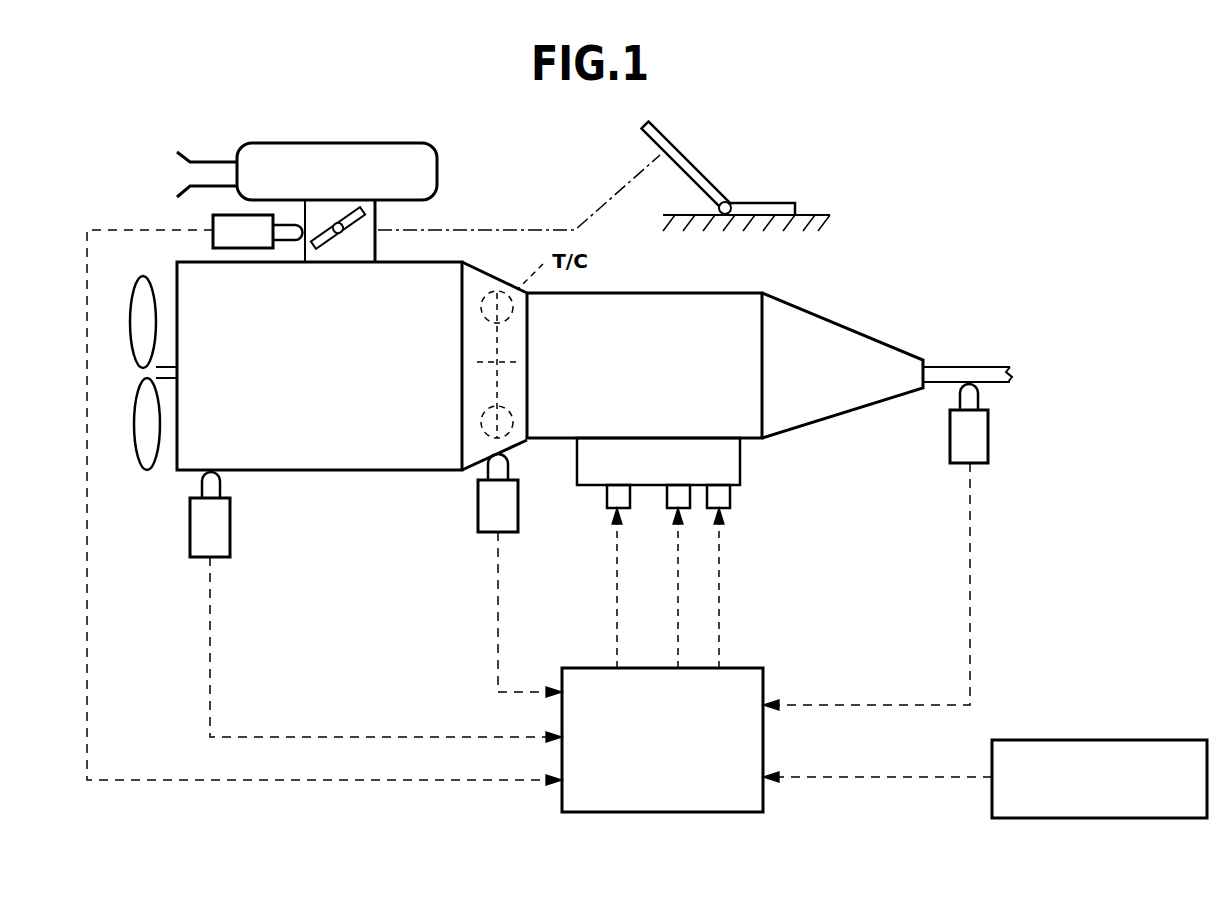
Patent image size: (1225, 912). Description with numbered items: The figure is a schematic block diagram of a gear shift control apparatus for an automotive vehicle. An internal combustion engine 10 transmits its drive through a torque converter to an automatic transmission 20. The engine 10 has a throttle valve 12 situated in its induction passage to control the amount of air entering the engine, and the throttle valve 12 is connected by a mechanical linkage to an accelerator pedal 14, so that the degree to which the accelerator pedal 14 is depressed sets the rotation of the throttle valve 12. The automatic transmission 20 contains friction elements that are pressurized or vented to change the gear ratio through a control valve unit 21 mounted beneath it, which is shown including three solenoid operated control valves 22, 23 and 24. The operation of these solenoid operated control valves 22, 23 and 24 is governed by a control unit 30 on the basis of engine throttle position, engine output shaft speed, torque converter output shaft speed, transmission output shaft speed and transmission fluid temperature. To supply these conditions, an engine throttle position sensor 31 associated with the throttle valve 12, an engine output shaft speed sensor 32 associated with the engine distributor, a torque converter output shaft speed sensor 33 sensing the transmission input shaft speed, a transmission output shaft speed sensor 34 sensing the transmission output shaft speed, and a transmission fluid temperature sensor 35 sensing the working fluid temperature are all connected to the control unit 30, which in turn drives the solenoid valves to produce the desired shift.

The internal combustion engine 10 is at (358, 472).
The throttle valve 12 is at (351, 210).
The accelerator pedal 14 is at (645, 136).
The automatic transmission 20 is at (731, 293).
The control valve unit 21 is at (743, 461).
The solenoid operated control valve 22 is at (667, 508).
The solenoid operated control valve 23 is at (729, 508).
The solenoid operated control valve 24 is at (606, 508).
The control unit 30 is at (752, 668).
The engine throttle position sensor 31 is at (213, 220).
The engine output shaft speed sensor 32 is at (230, 545).
The torque converter output shaft speed sensor 33 is at (477, 520).
The transmission output shaft speed sensor 34 is at (988, 432).
The transmission fluid temperature sensor 35 is at (1077, 740).